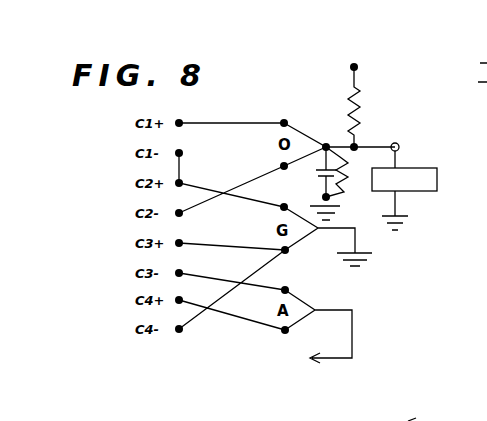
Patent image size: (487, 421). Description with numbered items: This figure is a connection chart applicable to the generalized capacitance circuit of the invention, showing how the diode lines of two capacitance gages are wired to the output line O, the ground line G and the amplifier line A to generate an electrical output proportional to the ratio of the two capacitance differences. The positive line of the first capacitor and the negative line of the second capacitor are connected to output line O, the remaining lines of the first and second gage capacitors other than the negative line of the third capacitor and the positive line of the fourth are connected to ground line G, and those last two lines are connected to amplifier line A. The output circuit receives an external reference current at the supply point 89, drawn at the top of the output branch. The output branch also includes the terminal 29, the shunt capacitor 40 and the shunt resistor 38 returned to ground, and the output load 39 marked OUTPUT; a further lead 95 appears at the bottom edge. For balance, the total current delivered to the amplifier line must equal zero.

The external reference current supply point 89 is at (358, 67).
The output terminal 29 is at (397, 144).
The output load 39 is at (415, 168).
The capacitor 40 is at (318, 175).
The resistor 38 is at (344, 193).
The lead 95 is at (395, 420).